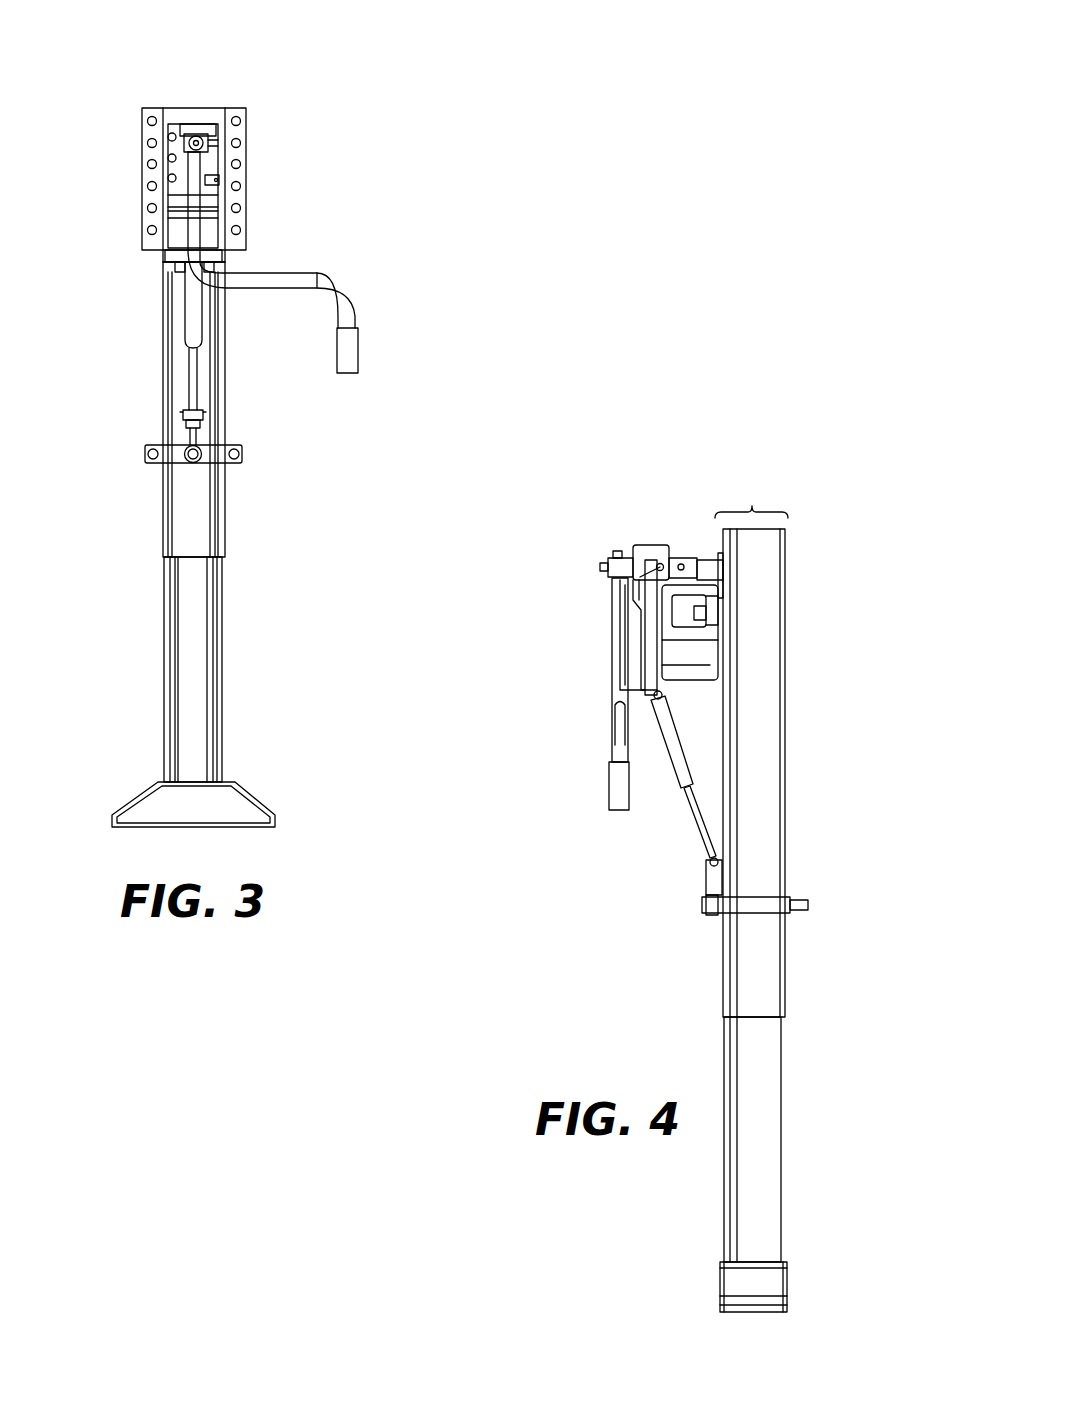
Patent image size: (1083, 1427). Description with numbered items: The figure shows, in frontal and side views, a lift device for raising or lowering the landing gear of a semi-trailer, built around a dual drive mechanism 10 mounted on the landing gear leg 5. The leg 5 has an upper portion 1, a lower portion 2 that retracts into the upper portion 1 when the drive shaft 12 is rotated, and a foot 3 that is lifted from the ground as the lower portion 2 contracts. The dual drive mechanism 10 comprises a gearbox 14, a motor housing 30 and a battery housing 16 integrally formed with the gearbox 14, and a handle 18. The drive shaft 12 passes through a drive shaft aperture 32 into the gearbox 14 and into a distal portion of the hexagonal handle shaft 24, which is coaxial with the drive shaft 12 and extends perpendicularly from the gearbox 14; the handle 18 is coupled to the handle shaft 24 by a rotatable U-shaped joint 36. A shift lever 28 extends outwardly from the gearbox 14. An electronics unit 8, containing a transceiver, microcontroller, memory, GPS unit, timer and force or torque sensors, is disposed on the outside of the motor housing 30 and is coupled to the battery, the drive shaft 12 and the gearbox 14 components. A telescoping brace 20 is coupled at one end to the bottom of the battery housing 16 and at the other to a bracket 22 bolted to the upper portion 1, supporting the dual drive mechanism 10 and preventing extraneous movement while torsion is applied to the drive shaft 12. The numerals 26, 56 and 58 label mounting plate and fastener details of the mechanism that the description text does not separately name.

In FIG. 3, the upper portion 1 is at (218, 522).
In FIG. 4, the upper portion 1 is at (782, 822).
In FIG. 3, the lower portion 2 is at (218, 662).
In FIG. 4, the lower portion 2 is at (765, 1110).
In FIG. 3, the foot 3 is at (250, 805).
In FIG. 4, the foot 3 is at (780, 1290).
In FIG. 4, the leg 5 is at (752, 505).
In FIG. 4, the electronics unit 8 is at (712, 612).
In FIG. 3, the dual drive mechanism 10 is at (408, 182).
In FIG. 4, the dual drive mechanism 10 is at (578, 538).
In FIG. 4, the drive shaft 12 is at (706, 558).
In FIG. 4, the gearbox 14 is at (650, 556).
In FIG. 4, the battery housing 16 is at (695, 650).
In FIG. 3, the handle 18 is at (345, 285).
In FIG. 4, the handle 18 is at (618, 722).
In FIG. 3, the brace 20 is at (191, 336).
In FIG. 4, the brace 20 is at (690, 762).
In FIG. 3, the bracket 22 is at (165, 460).
In FIG. 4, the bracket 22 is at (775, 915).
In FIG. 3, the handle shaft 24 is at (198, 142).
In FIG. 4, the handle shaft 24 is at (608, 566).
In FIG. 3, the mounting plate 26 is at (176, 226).
In FIG. 4, the mounting plate 26 is at (640, 651).
In FIG. 3, the shift lever 28 is at (240, 142).
In FIG. 4, the shift lever 28 is at (656, 572).
In FIG. 4, the motor housing 30 is at (718, 590).
In FIG. 4, the drive shaft aperture 32 is at (681, 556).
In FIG. 3, the U-shaped joint 36 is at (204, 158).
In FIG. 3, the cap 56 is at (183, 122).
In FIG. 3, the fastener holes 58 is at (168, 137).